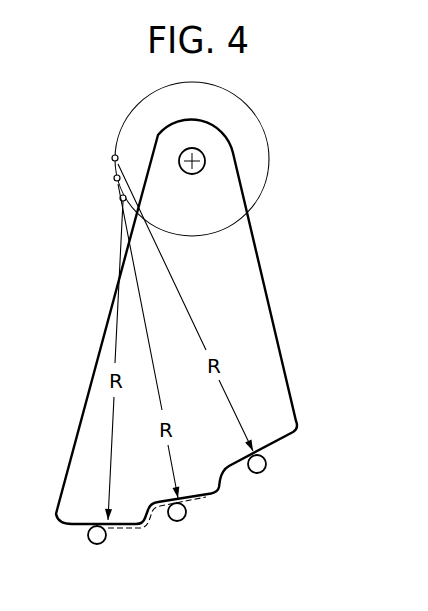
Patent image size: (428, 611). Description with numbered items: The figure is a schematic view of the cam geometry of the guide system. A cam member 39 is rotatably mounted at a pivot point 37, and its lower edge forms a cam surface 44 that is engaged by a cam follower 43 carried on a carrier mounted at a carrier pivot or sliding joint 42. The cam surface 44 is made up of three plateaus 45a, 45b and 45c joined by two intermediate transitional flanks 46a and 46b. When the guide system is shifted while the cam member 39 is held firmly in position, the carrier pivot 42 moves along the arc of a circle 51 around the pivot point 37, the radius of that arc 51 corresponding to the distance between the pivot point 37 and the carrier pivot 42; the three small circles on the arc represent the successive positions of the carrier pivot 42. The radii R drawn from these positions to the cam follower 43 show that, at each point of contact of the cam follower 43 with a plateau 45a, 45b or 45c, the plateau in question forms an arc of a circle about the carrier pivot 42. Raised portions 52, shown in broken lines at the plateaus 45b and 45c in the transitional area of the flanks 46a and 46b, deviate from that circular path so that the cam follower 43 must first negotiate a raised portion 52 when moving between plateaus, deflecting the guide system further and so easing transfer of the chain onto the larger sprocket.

The pivot point 37 is at (233, 168).
The cam member 39 is at (271, 320).
The carrier pivot 42 is at (112, 158).
The cam follower 43 is at (95, 544).
The cam surface 44 is at (284, 437).
The plateau 45a is at (240, 461).
The plateau 45b is at (159, 504).
The plateau 45c is at (72, 526).
The transitional flank 46a is at (223, 478).
The transitional flank 46b is at (143, 503).
The arc of a circle 51 is at (233, 168).
The raised portions 52 is at (134, 532).